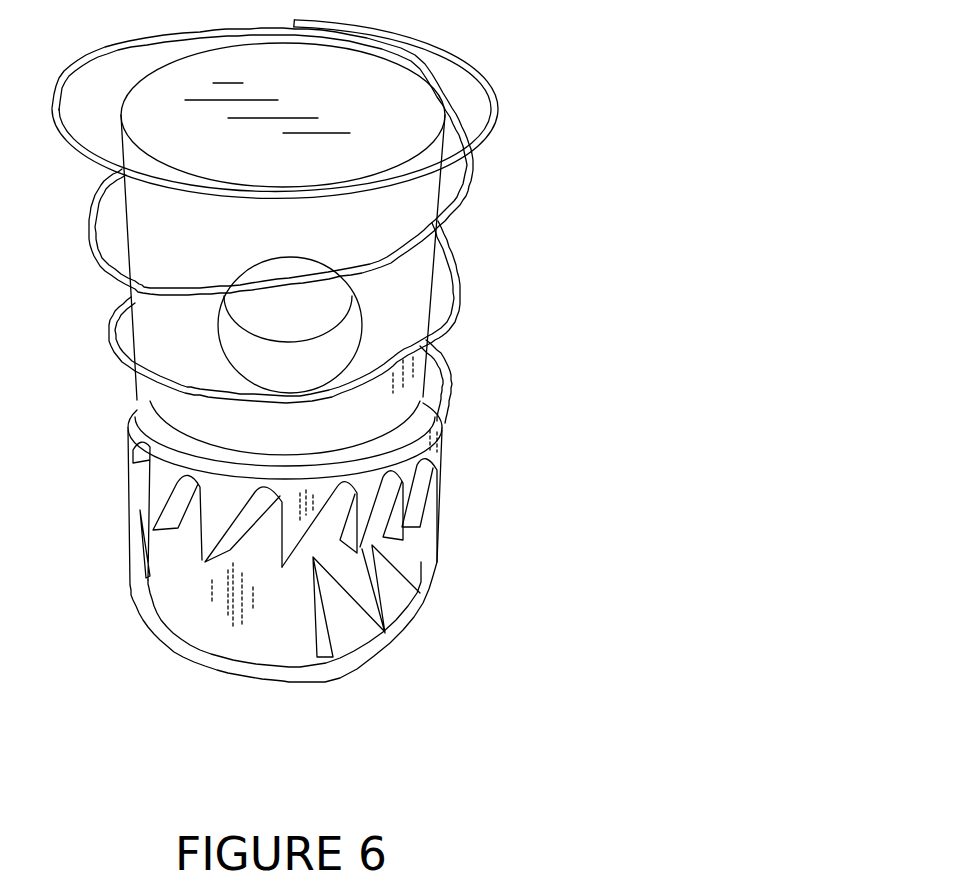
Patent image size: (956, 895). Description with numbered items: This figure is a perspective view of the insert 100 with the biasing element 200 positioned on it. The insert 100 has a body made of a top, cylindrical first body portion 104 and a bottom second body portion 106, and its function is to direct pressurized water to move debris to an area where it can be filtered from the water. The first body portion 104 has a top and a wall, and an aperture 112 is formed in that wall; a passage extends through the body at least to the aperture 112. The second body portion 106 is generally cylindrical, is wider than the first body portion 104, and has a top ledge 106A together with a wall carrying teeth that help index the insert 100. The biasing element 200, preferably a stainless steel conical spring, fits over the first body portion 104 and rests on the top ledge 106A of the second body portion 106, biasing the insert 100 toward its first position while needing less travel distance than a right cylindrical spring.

The insert 100 is at (283, 362).
The first body portion 104 is at (133, 201).
The second body portion 106 is at (425, 520).
The top ledge 106A is at (415, 427).
The aperture 112 is at (253, 316).
The biasing element 200 is at (514, 66).